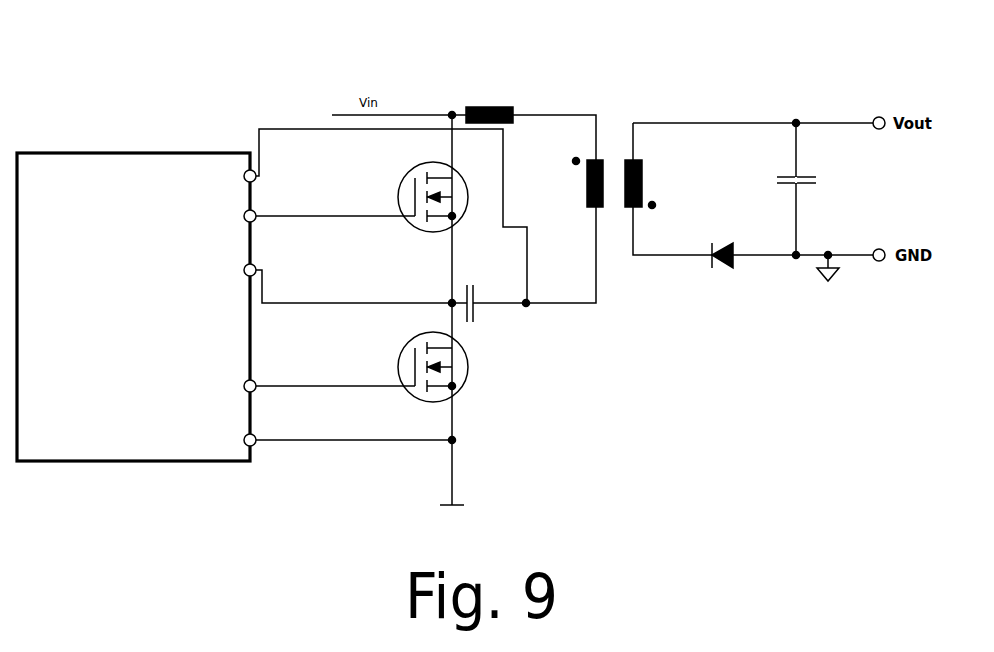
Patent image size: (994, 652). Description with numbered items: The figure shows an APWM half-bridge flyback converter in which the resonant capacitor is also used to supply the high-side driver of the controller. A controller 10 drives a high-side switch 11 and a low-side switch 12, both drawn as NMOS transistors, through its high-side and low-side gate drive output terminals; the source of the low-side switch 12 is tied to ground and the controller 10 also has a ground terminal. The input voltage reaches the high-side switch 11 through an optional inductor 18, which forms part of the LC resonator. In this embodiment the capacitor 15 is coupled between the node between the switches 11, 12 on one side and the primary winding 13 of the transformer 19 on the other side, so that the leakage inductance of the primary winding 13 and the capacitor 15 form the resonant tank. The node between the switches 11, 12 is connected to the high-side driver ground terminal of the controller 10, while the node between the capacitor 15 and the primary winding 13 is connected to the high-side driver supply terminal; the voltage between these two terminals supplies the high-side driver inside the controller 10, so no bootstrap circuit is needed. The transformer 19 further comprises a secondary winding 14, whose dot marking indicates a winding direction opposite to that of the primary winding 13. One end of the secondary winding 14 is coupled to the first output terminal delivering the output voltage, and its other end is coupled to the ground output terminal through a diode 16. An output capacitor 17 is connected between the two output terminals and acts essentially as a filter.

The controller 10 is at (107, 153).
The high-side switch 11 is at (405, 179).
The low-side switch 12 is at (466, 379).
The primary winding 13 is at (587, 187).
The secondary winding 14 is at (643, 173).
The capacitor 15 is at (477, 312).
The diode 16 is at (728, 243).
The output capacitor 17 is at (812, 178).
The inductor 18 is at (489, 107).
The transformer 19 is at (611, 118).